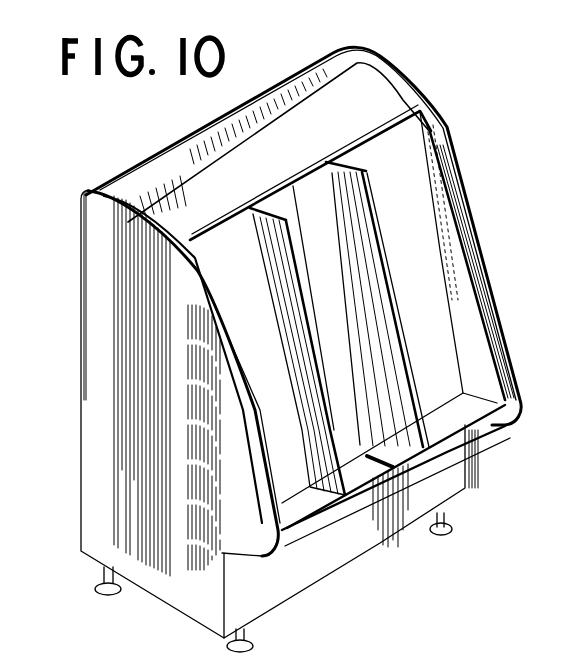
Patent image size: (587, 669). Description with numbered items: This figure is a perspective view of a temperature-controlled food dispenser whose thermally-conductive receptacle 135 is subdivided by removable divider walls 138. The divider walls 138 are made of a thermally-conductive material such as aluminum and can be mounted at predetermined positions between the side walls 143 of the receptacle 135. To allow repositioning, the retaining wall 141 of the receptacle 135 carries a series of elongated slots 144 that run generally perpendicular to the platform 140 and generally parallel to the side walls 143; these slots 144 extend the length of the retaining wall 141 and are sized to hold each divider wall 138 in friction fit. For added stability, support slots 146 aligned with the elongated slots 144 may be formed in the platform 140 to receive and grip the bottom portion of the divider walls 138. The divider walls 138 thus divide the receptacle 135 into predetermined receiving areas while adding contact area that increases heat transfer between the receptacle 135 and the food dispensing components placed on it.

The thermally-conductive receptacle 135 is at (460, 275).
The divider wall 138 is at (403, 349).
The platform 140 is at (466, 412).
The retaining wall 141 is at (382, 160).
The side wall 143 is at (450, 206).
The elongated slot 144 is at (245, 205).
The support slot 146 is at (374, 463).